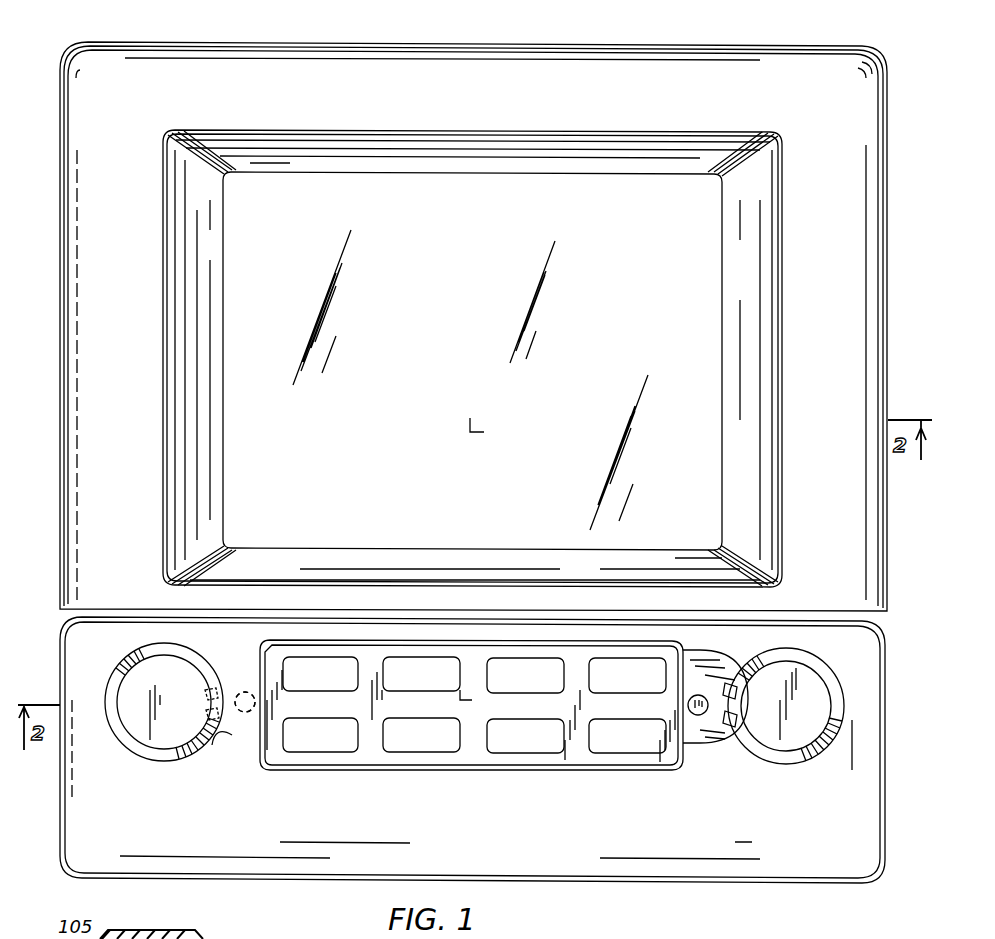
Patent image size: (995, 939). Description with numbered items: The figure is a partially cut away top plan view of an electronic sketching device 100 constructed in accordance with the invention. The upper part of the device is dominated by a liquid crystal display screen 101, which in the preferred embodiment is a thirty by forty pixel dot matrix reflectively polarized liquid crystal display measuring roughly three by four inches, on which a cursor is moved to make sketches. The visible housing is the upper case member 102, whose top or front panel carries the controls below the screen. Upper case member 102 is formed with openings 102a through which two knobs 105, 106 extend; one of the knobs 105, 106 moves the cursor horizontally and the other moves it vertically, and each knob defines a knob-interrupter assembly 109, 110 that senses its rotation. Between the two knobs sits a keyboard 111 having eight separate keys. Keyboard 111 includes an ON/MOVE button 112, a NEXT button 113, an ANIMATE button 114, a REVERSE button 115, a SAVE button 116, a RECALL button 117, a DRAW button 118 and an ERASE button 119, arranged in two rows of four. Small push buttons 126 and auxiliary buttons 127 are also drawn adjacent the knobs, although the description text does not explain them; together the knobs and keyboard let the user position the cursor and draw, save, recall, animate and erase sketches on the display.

The electronic sketching device 100 is at (159, 24).
The liquid crystal display screen 101 is at (270, 186).
The upper case member 102 is at (70, 809).
The openings 102a is at (212, 745).
The knob 105 is at (168, 760).
The knob 106 is at (790, 757).
The knob-interrupter assembly 109 is at (238, 690).
The knob-interrupter assembly 110 is at (720, 672).
The keyboard 111 is at (523, 637).
The ON/MOVE button 112 is at (352, 634).
The NEXT button 113 is at (343, 752).
The ANIMATE button 114 is at (452, 636).
The REVERSE button 115 is at (440, 752).
The SAVE button 116 is at (523, 658).
The RECALL button 117 is at (527, 753).
The DRAW button 118 is at (618, 658).
The ERASE button 119 is at (627, 753).
The push button 126 is at (698, 715).
The auxiliary buttons 127 is at (737, 719).